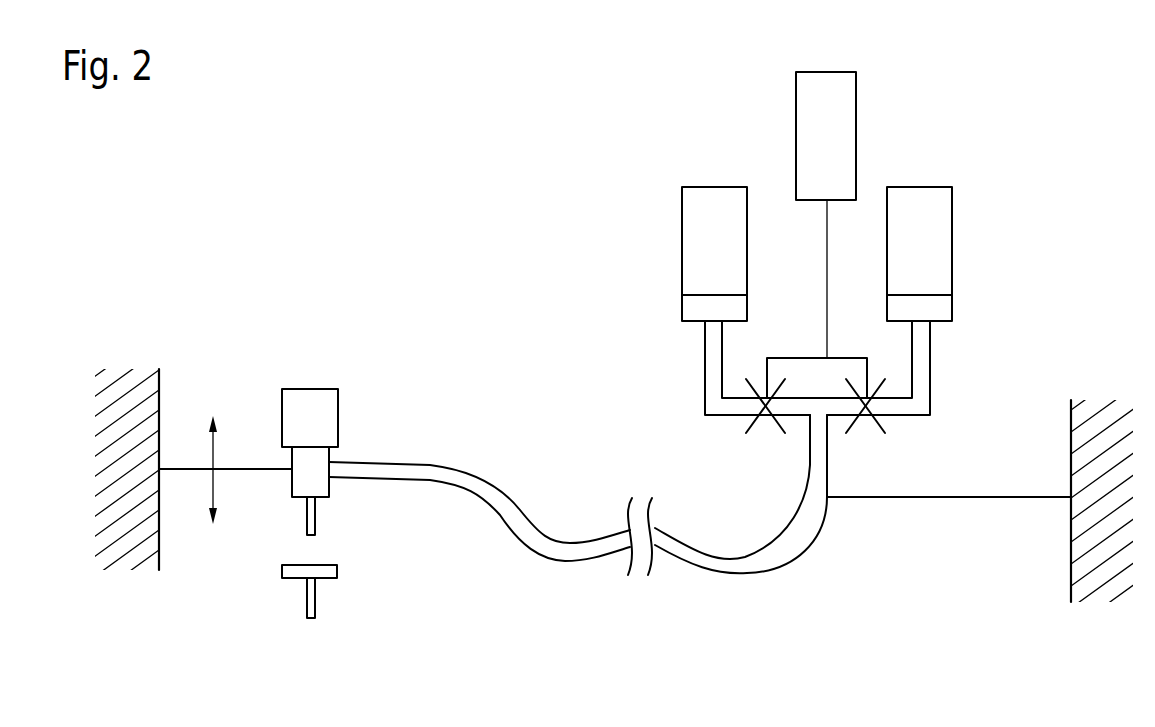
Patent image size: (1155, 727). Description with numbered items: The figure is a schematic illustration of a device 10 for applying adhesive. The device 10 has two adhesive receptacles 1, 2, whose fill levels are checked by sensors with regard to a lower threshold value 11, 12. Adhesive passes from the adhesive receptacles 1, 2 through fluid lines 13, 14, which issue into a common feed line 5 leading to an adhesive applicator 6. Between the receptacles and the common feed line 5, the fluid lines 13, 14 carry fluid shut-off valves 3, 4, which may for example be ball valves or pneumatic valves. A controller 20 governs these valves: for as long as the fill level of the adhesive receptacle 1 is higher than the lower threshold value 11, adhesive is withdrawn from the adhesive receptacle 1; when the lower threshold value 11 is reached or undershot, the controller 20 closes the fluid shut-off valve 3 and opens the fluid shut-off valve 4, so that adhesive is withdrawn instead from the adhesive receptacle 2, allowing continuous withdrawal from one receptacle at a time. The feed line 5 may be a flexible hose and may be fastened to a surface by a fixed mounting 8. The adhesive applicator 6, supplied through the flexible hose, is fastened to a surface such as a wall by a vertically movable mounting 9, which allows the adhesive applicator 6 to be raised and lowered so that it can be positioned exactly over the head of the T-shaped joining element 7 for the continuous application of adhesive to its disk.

The adhesive receptacle 1 is at (714, 187).
The adhesive receptacle 2 is at (919, 187).
The fluid shut-off valve 3 is at (750, 428).
The fluid shut-off valve 4 is at (880, 430).
The common feed line 5 is at (752, 576).
The adhesive applicator 6 is at (310, 389).
The joining element 7 is at (337, 571).
The fixed mounting 8 is at (927, 499).
The vertically movable mounting 9 is at (249, 472).
The device 10 is at (428, 228).
The lower threshold value 11 is at (747, 308).
The lower threshold value 12 is at (952, 308).
The fluid line 13 is at (705, 368).
The fluid line 14 is at (930, 362).
The controller 20 is at (795, 85).